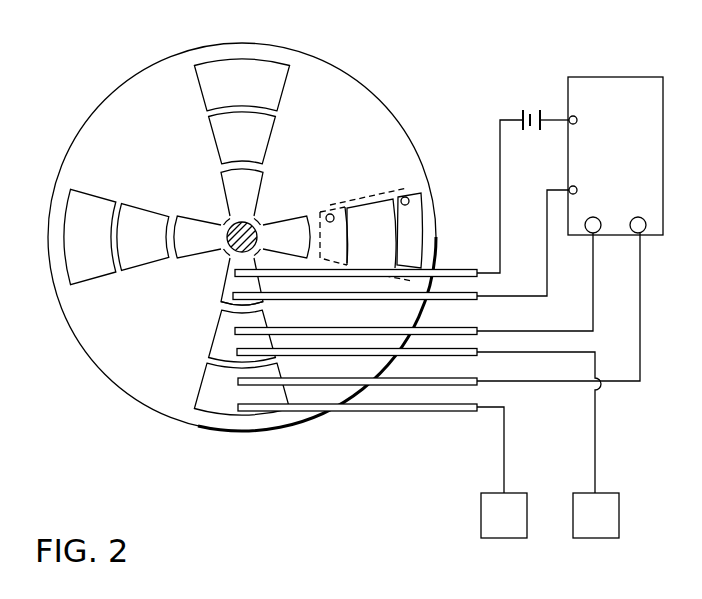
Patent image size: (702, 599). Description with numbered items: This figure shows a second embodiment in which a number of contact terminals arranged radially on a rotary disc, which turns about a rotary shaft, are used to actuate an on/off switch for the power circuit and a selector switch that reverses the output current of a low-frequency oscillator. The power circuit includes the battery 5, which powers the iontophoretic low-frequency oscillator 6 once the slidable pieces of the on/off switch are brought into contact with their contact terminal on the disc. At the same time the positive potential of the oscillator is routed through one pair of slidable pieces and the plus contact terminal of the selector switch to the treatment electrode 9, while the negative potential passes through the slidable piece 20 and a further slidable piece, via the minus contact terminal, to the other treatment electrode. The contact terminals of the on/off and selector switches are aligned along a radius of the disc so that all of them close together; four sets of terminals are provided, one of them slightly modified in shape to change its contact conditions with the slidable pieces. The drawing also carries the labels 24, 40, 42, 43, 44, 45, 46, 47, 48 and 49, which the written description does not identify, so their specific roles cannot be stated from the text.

The battery 5 is at (546, 104).
The iontophoretic low-frequency oscillator 6 is at (623, 97).
The treatment electrode 9 is at (603, 520).
The slidable piece for operating selector switch 20 is at (247, 387).
The electrode 24 is at (432, 407).
The display device 40 is at (500, 520).
The shaft 42 is at (228, 220).
The rotor arms 43 is at (235, 193).
The rotor disc 44 is at (336, 92).
The rotor arm end face 45 is at (232, 302).
The inner electrode segments 46 is at (223, 133).
The outer electrode segments 47 is at (238, 72).
The electrode 48 is at (327, 327).
The electrode 49 is at (338, 352).